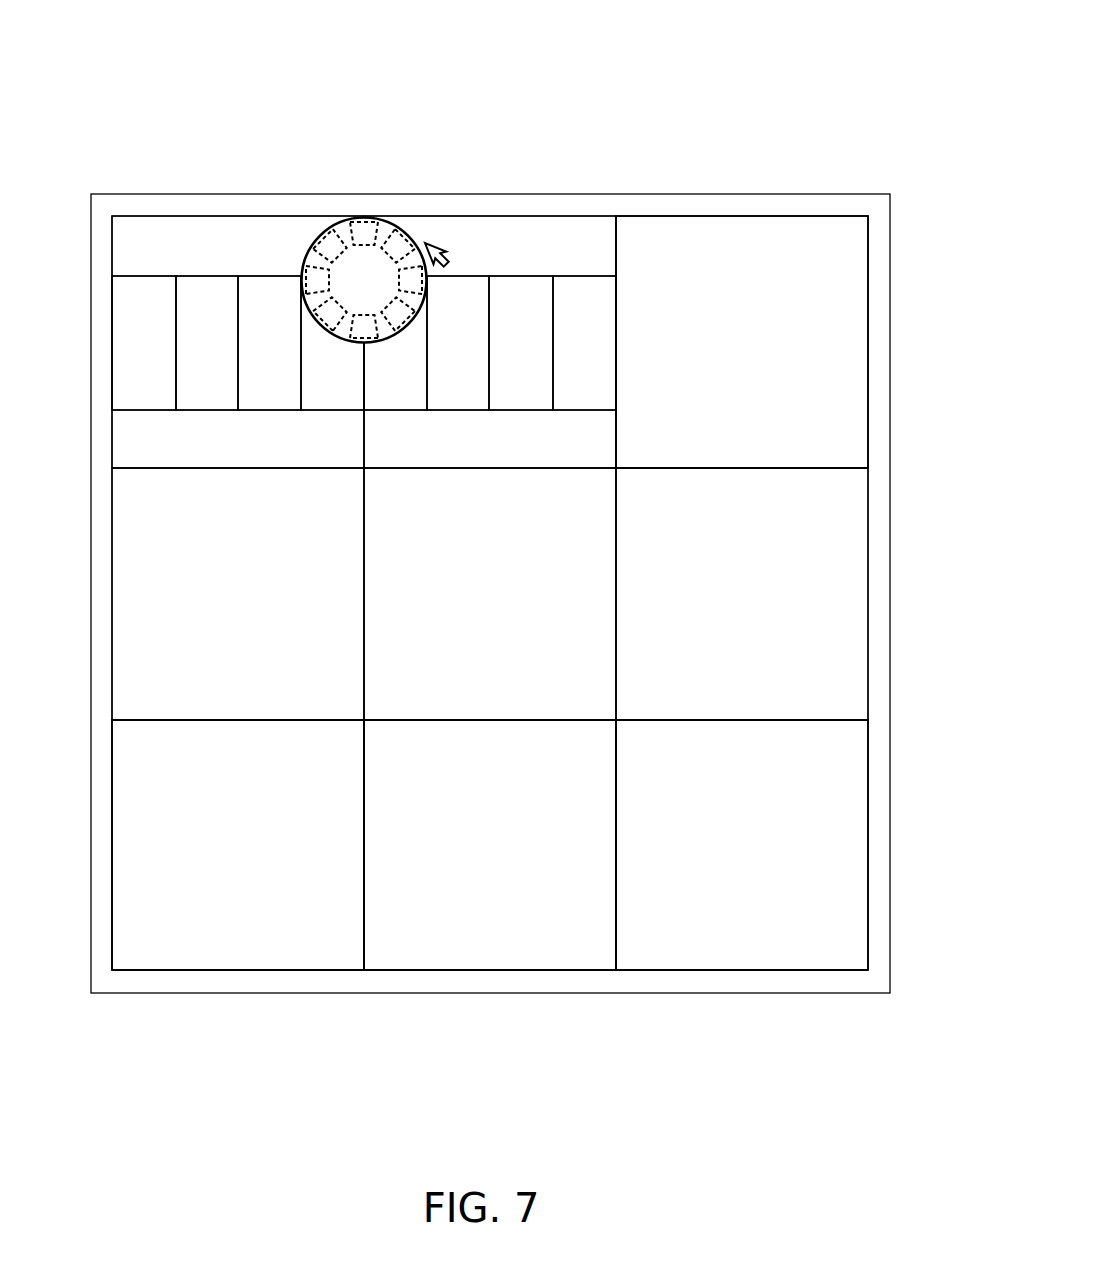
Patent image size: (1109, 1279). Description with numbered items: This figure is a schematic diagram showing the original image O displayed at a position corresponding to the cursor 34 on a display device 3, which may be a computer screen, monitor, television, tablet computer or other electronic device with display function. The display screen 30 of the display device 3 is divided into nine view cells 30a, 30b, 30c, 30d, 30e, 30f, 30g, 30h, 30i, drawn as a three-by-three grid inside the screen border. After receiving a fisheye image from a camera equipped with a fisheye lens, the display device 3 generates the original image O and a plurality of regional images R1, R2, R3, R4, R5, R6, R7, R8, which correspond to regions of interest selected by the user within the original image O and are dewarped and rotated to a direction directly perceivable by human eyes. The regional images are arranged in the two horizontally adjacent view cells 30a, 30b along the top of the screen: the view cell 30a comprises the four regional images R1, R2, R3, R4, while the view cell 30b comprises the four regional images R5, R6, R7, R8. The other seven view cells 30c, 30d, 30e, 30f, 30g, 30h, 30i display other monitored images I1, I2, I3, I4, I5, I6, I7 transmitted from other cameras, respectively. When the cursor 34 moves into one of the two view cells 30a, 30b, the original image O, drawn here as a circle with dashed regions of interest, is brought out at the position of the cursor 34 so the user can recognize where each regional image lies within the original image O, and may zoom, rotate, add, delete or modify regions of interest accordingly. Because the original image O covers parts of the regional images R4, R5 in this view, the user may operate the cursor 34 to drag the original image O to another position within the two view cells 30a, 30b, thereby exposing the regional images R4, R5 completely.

The display device 3 is at (791, 88).
The display screen 30 is at (620, 180).
The view cell 30a is at (240, 255).
The view cell 30b is at (528, 255).
The view cell 30c is at (714, 253).
The view cell 30d is at (183, 698).
The view cell 30e is at (436, 698).
The view cell 30f is at (688, 698).
The view cell 30g is at (287, 950).
The view cell 30h is at (540, 950).
The view cell 30i is at (790, 950).
The cursor 34 is at (447, 257).
The original image O is at (305, 245).
The regional image R1 is at (144, 343).
The regional image R2 is at (207, 343).
The regional image R3 is at (269, 343).
The regional image R4 is at (332, 343).
The regional image R5 is at (395, 343).
The regional image R6 is at (458, 343).
The regional image R7 is at (521, 343).
The regional image R8 is at (584, 343).
The monitored image I1 is at (742, 342).
The monitored image I2 is at (238, 594).
The monitored image I3 is at (490, 594).
The monitored image I4 is at (742, 594).
The monitored image I5 is at (238, 845).
The monitored image I6 is at (490, 845).
The monitored image I7 is at (742, 845).